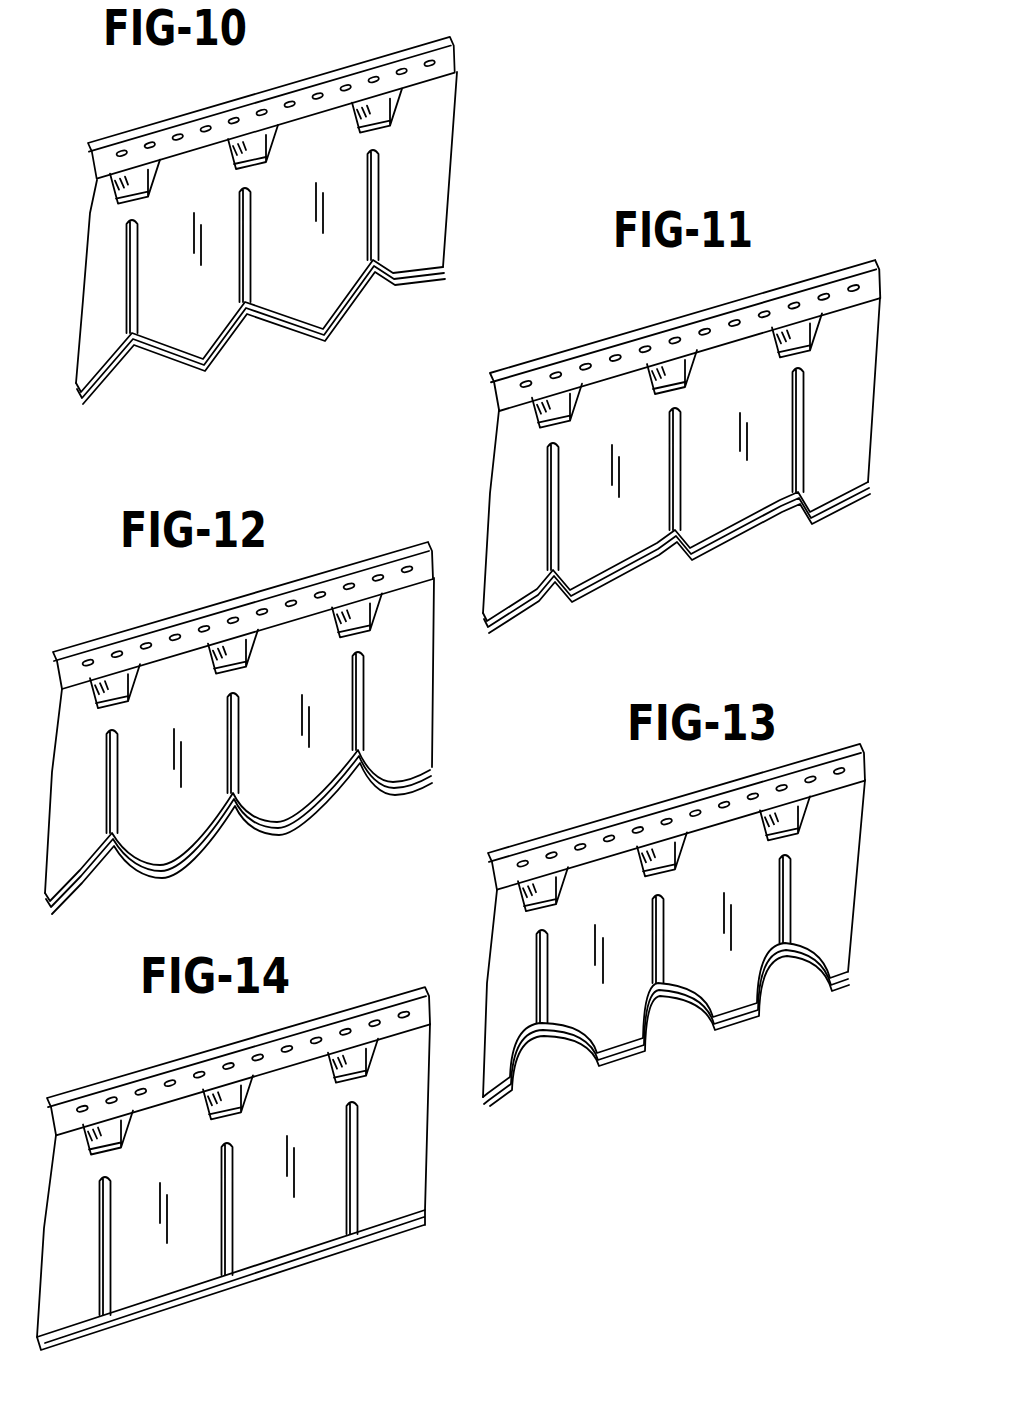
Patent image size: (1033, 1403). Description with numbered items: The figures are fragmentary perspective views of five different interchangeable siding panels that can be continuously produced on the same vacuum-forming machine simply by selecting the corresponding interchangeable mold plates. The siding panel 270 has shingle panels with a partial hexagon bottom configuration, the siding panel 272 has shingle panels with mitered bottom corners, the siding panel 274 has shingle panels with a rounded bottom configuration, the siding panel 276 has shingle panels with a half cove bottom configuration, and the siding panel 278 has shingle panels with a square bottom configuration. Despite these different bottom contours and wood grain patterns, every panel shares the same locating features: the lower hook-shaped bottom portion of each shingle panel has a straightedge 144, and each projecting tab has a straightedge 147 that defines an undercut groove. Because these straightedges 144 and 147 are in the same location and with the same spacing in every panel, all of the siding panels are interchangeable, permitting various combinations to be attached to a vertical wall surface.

In FIG. 10, the straightedge 144 is at (320, 300).
In FIG. 11, the straightedge 144 is at (733, 520).
In FIG. 12, the straightedge 144 is at (303, 810).
In FIG. 13, the straightedge 144 is at (733, 1003).
In FIG. 14, the straightedge 144 is at (295, 1250).
In FIG. 10, the straightedge 147 is at (262, 170).
In FIG. 11, the straightedge 147 is at (670, 395).
In FIG. 12, the straightedge 147 is at (259, 673).
In FIG. 13, the straightedge 147 is at (690, 884).
In FIG. 14, the straightedge 147 is at (122, 1158).
In FIG. 10, the siding panel 270 is at (451, 206).
In FIG. 11, the siding panel 272 is at (618, 318).
In FIG. 12, the siding panel 274 is at (173, 606).
In FIG. 13, the siding panel 276 is at (632, 797).
In FIG. 14, the siding panel 278 is at (172, 1050).